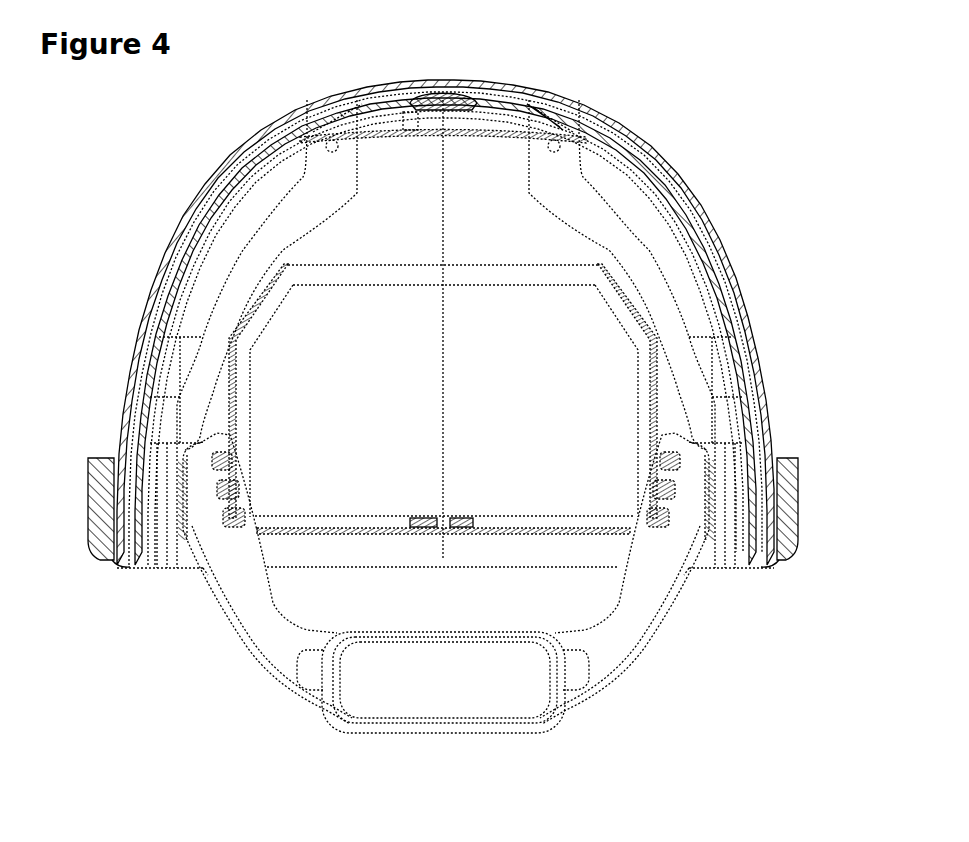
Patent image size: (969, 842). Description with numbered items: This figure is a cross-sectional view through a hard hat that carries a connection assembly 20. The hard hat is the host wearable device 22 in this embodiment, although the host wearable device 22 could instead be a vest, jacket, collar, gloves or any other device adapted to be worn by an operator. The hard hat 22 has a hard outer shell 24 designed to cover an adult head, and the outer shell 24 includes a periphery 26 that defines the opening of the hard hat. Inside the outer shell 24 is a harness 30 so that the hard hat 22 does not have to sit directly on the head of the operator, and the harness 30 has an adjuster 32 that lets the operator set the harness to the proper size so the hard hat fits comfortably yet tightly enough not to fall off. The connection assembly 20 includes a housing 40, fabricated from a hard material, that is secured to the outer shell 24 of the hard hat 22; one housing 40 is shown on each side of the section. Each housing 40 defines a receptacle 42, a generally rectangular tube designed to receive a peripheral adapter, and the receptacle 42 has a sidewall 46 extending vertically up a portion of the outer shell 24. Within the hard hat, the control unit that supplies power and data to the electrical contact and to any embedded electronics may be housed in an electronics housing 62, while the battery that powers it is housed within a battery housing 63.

The connection assembly 20 is at (115, 431).
The host wearable device 22 is at (190, 201).
The outer shell 24 is at (713, 230).
The periphery 26 is at (712, 572).
The harness 30 is at (222, 590).
The adjuster 32 is at (400, 734).
The housing 40 is at (87, 468).
The receptacle 42 is at (117, 570).
The sidewall 46 is at (88, 510).
The electronics housing 62 is at (532, 198).
The battery housing 63 is at (358, 195).